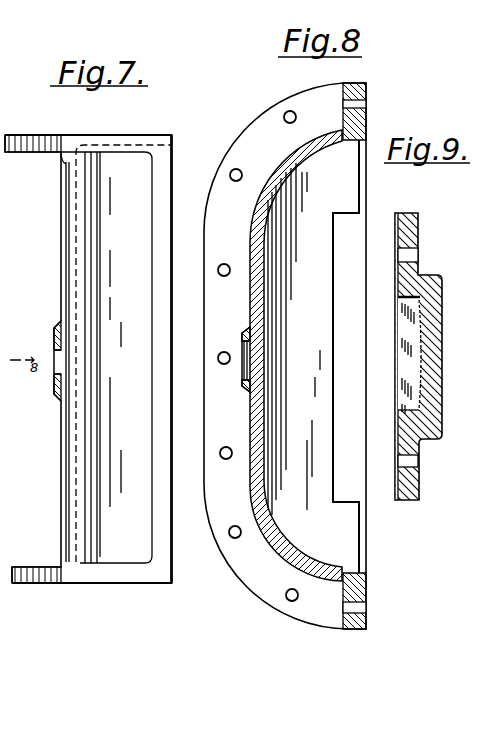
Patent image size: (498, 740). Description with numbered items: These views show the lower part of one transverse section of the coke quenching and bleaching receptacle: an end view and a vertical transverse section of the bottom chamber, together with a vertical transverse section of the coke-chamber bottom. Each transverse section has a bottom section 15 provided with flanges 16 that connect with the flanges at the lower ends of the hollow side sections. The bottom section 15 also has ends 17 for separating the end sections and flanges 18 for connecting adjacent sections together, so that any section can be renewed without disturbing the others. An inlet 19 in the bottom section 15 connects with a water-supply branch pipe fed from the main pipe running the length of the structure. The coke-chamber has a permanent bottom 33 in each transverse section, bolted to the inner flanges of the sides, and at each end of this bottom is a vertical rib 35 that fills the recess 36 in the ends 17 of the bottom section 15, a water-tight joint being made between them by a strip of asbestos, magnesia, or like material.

In FIG. 7, the bottom section 15 is at (72, 483).
In FIG. 7, the flanges 16 is at (160, 525).
In FIG. 8, the flanges 16 is at (302, 357).
In FIG. 8, the ends 17 is at (332, 532).
In FIG. 7, the flanges 18 is at (36, 364).
In FIG. 8, the flanges 18 is at (258, 356).
In FIG. 7, the inlet 19 is at (54, 347).
In FIG. 8, the inlet 19 is at (242, 366).
In FIG. 9, the permanent bottom 33 is at (437, 356).
In FIG. 9, the vertical rib 35 is at (406, 383).
In FIG. 8, the recess 36 is at (353, 358).